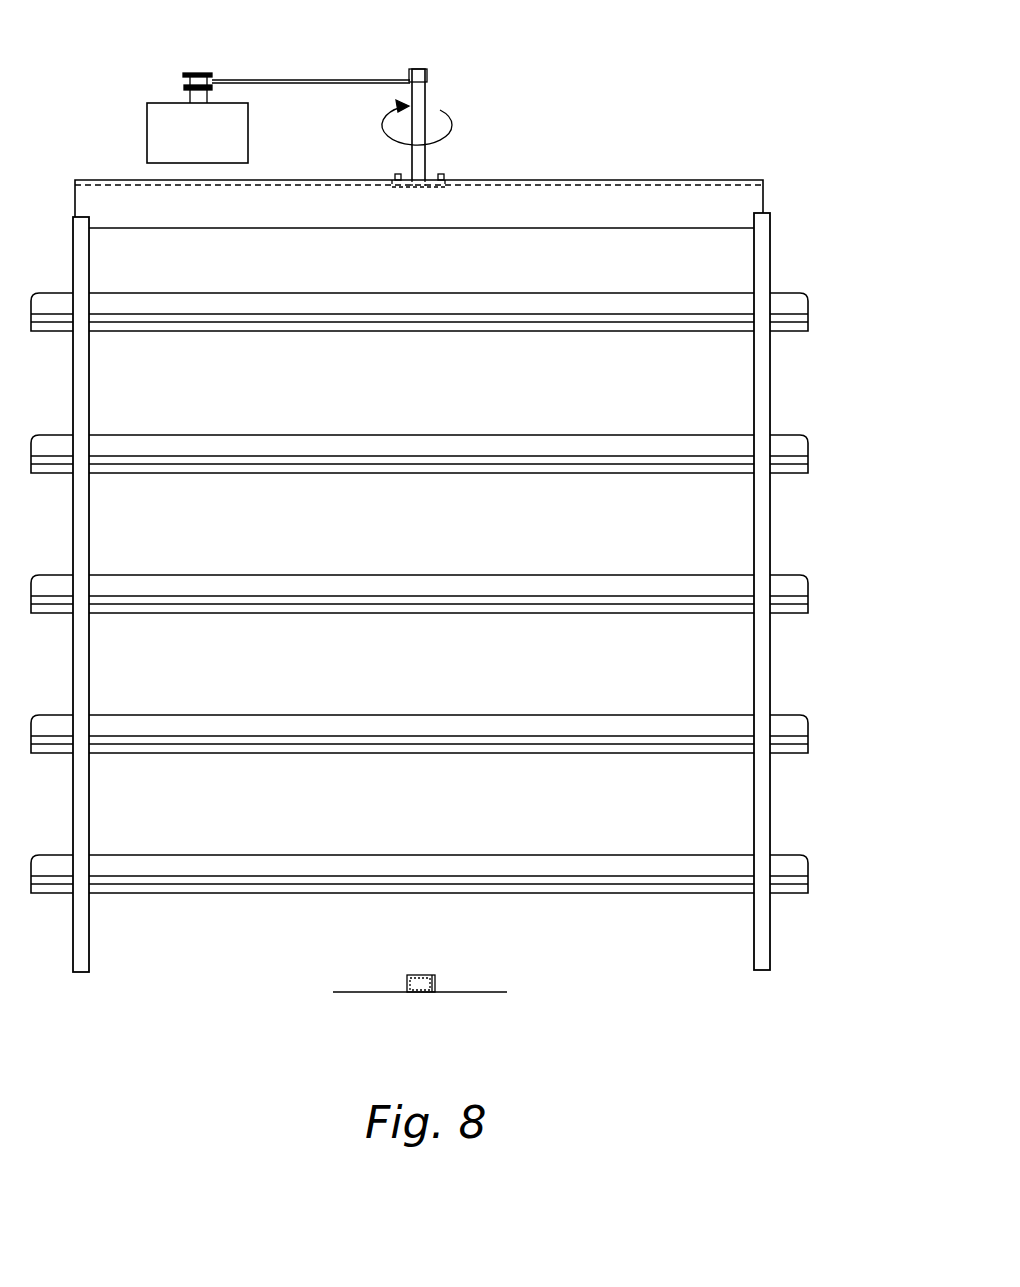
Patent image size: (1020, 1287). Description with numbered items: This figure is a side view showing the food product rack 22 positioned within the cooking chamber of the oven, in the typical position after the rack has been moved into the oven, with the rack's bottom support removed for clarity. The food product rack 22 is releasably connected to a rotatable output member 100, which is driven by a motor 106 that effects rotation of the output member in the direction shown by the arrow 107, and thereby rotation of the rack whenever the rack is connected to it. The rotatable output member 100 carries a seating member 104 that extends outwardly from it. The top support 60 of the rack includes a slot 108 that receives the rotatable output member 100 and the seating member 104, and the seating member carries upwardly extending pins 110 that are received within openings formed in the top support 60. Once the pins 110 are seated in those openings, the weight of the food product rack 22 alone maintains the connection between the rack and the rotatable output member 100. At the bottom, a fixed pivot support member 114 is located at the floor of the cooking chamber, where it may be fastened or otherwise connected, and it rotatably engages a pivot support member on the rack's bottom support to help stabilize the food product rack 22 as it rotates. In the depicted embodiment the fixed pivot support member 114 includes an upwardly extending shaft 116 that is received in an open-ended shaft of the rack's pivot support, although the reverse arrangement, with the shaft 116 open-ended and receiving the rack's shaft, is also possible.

The food product rack 22 is at (771, 668).
The top support 60 is at (692, 215).
The rotatable output member 100 is at (427, 93).
The seating member 104 is at (400, 188).
The motor 106 is at (147, 117).
The arrow 107 is at (452, 128).
The slot 108 is at (620, 180).
The pins 110 is at (397, 174).
The fixed pivot support member 114 is at (440, 983).
The shaft 116 is at (406, 985).